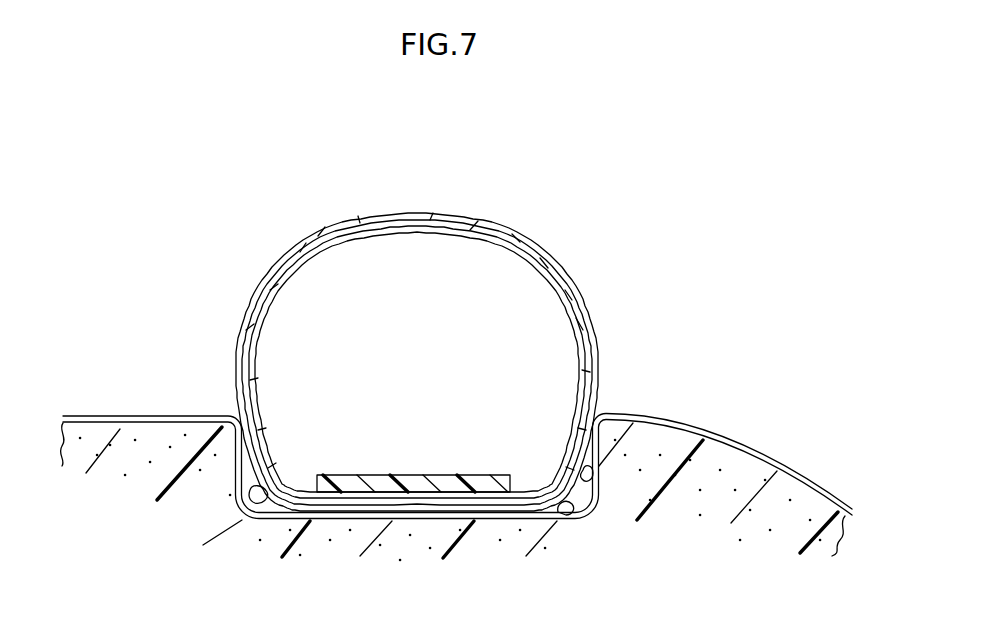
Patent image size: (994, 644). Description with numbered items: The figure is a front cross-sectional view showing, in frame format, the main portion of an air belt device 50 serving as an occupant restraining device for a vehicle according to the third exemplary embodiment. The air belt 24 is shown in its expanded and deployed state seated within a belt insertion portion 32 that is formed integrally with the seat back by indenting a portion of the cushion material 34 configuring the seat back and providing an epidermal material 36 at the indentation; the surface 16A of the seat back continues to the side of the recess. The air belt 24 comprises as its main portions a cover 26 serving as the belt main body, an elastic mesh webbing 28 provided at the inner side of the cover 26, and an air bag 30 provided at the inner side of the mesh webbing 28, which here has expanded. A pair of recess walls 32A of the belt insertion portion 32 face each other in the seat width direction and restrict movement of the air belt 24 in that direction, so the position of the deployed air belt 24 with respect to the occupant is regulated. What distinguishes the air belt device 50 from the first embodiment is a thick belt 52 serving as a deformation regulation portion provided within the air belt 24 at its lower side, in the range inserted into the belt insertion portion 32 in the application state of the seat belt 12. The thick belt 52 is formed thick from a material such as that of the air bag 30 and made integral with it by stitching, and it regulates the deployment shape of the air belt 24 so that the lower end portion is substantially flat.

The seat belt 12 is at (417, 324).
The floor surface 16A is at (147, 416).
The air belt 24 is at (557, 258).
The cover 26 is at (345, 213).
The mesh webbing 28 is at (426, 226).
The air bag 30 is at (484, 233).
The belt insertion portion 32 is at (557, 520).
The recess walls 32A is at (597, 487).
The cushion material 34 is at (657, 442).
The epidermal material 36 is at (743, 447).
The air belt device 50 is at (650, 238).
The thick belt 52 is at (415, 476).